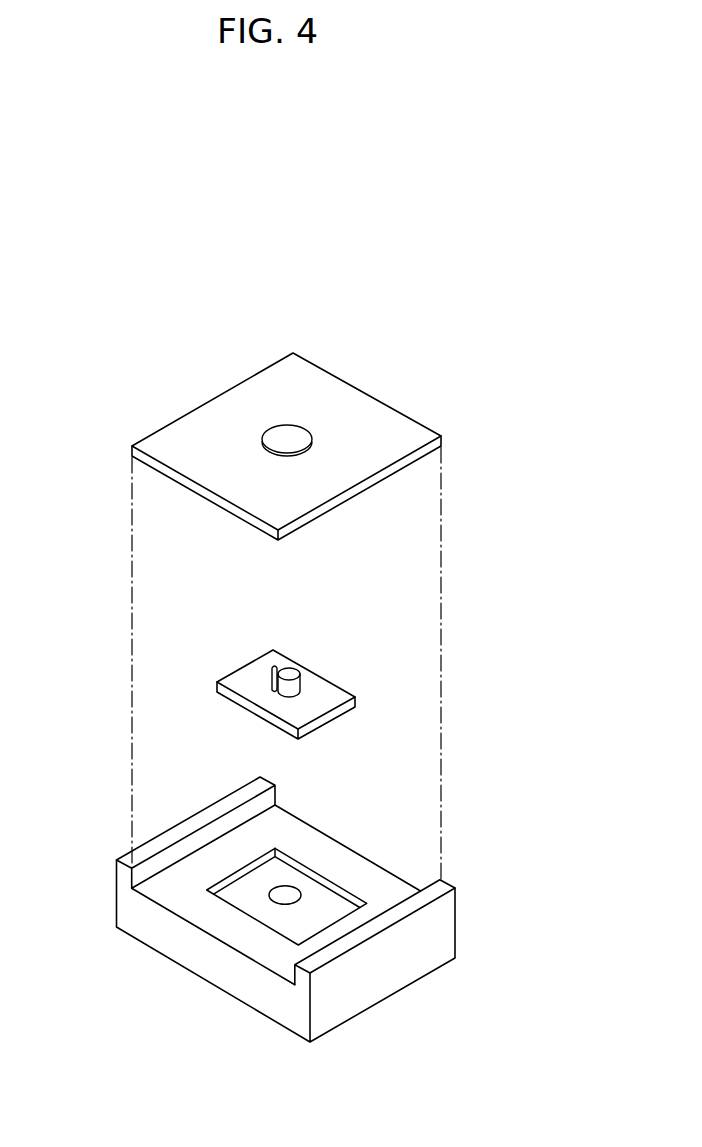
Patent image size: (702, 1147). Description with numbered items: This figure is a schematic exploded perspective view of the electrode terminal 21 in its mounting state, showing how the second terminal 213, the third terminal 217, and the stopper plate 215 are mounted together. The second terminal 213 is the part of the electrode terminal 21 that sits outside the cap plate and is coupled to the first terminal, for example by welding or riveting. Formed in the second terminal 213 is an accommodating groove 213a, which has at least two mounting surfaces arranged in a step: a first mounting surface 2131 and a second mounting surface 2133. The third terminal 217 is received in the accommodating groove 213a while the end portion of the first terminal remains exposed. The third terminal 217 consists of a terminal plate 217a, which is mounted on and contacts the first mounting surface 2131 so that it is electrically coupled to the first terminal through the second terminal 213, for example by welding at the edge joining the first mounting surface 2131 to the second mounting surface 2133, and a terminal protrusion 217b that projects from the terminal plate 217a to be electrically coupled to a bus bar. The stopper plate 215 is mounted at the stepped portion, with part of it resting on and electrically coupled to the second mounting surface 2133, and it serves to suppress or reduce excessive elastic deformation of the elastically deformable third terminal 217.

The electrode terminal 21 is at (298, 273).
The second terminal 213 is at (497, 924).
The accommodating groove 213a is at (180, 1071).
The first mounting surface 2131 is at (293, 931).
The second mounting surface 2133 is at (213, 920).
The stopper plate 215 is at (460, 429).
The third terminal 217 is at (234, 648).
The terminal plate 217a is at (337, 713).
The terminal protrusion 217b is at (293, 670).